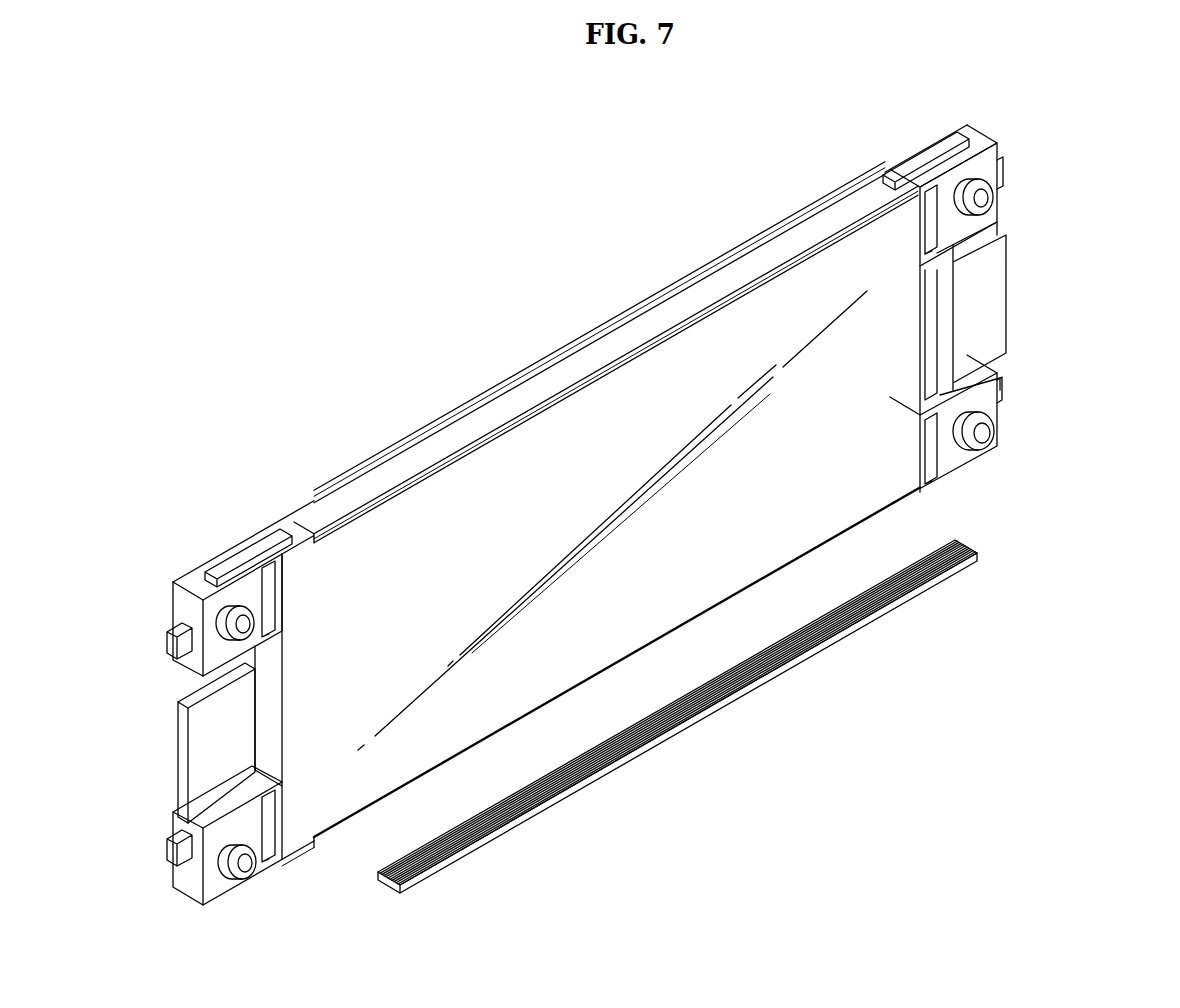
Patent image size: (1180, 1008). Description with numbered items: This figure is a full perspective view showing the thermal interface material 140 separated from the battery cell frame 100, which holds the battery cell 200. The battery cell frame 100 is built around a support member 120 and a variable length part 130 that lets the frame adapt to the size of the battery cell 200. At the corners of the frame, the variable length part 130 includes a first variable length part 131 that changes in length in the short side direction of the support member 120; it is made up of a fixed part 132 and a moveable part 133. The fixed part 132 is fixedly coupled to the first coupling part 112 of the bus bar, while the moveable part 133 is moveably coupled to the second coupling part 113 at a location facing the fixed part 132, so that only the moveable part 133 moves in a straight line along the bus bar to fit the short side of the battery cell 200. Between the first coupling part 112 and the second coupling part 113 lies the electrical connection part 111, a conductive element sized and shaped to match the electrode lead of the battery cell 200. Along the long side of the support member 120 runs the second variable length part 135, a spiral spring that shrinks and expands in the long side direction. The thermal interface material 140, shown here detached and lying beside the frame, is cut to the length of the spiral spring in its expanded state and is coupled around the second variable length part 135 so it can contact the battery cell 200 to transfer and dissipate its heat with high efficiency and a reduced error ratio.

The battery cell frame 100 is at (366, 294).
The support member 120 is at (362, 406).
The variable length part 130 is at (1133, 139).
The first variable length part 131 is at (1077, 166).
The fixed part 132 is at (950, 460).
The moveable part 133 is at (983, 160).
The second variable length part 135 is at (795, 243).
The electrical connection part 111 is at (988, 302).
The second coupling part 113 is at (945, 258).
The first coupling part 112 is at (945, 388).
The thermal interface material 140 is at (805, 655).
The battery cell 200 is at (603, 653).